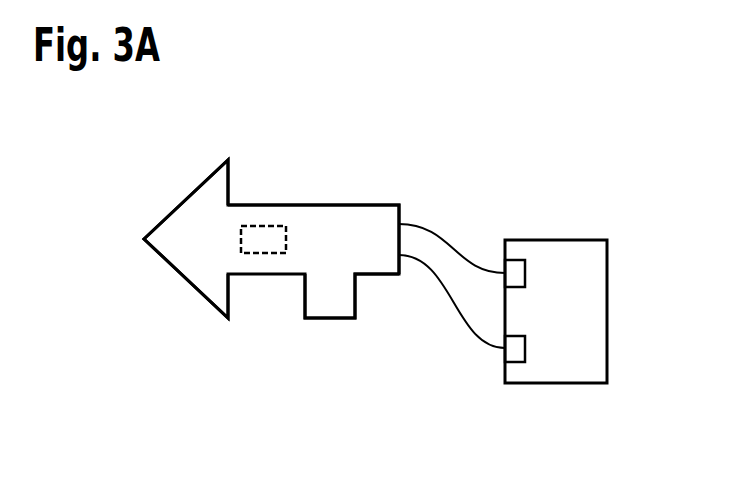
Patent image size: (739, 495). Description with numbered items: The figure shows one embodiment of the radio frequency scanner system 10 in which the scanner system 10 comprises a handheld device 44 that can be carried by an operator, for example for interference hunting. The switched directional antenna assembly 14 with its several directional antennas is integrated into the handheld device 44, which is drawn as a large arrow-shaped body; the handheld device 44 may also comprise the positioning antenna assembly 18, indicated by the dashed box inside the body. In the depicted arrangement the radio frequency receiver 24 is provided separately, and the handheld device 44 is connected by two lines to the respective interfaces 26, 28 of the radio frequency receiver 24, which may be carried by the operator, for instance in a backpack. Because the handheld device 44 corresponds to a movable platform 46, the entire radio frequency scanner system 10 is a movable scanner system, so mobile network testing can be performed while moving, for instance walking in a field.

The radio frequency scanner system 10 is at (316, 148).
The switched directional antenna assembly 14 is at (163, 200).
The movable platform 46 is at (383, 172).
The positioning antenna assembly 18 is at (263, 253).
The handheld device 44 is at (373, 274).
The radio frequency receiver 24 is at (607, 287).
The interface 28 is at (519, 251).
The interface 26 is at (519, 372).